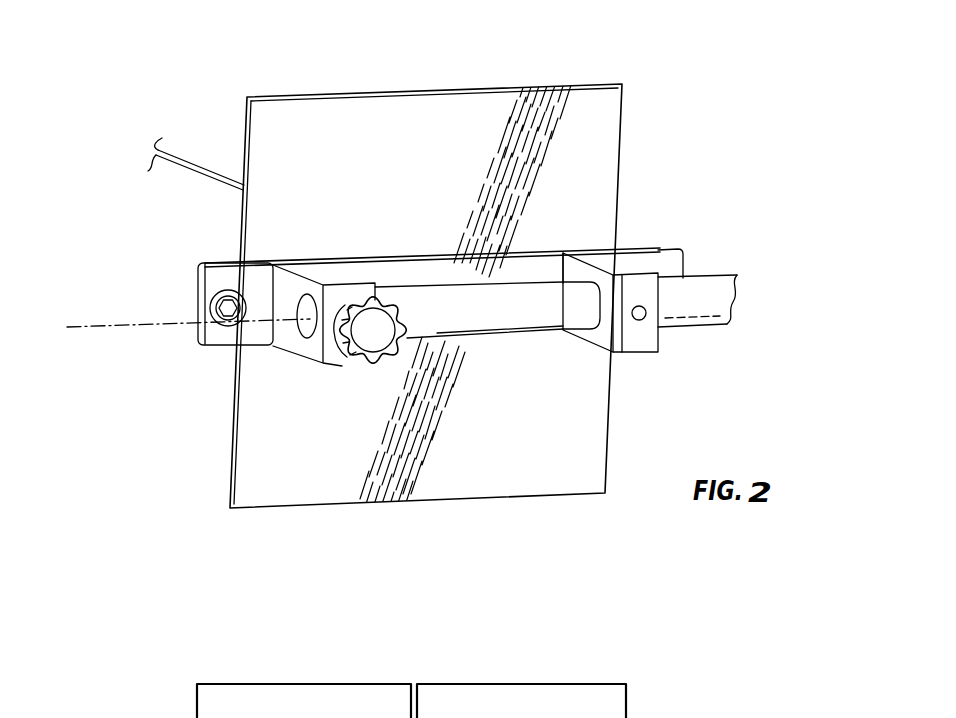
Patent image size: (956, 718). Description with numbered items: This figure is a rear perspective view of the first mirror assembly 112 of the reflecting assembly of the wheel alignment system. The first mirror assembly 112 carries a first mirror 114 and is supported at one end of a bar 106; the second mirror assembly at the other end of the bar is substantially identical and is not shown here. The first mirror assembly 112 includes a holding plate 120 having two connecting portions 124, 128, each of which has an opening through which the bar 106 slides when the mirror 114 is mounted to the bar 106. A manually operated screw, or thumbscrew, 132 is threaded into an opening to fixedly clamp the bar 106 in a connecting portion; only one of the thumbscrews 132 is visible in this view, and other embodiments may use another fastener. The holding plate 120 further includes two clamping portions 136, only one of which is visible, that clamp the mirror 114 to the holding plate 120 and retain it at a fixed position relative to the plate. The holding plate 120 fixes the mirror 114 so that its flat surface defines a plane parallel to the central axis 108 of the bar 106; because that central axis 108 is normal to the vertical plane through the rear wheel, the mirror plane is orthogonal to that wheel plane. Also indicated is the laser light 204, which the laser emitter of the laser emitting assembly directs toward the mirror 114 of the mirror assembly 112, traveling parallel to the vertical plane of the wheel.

The bar 106 is at (702, 300).
The central axis 108 is at (146, 332).
The first mirror assembly 112 is at (684, 70).
The first mirror 114 is at (270, 446).
The holding plate 120 is at (663, 267).
The connecting portion 124 is at (640, 350).
The connecting portion 128 is at (302, 283).
The thumbscrew 132 is at (372, 333).
The clamping portion 136 is at (632, 249).
The laser light 204 is at (184, 160).